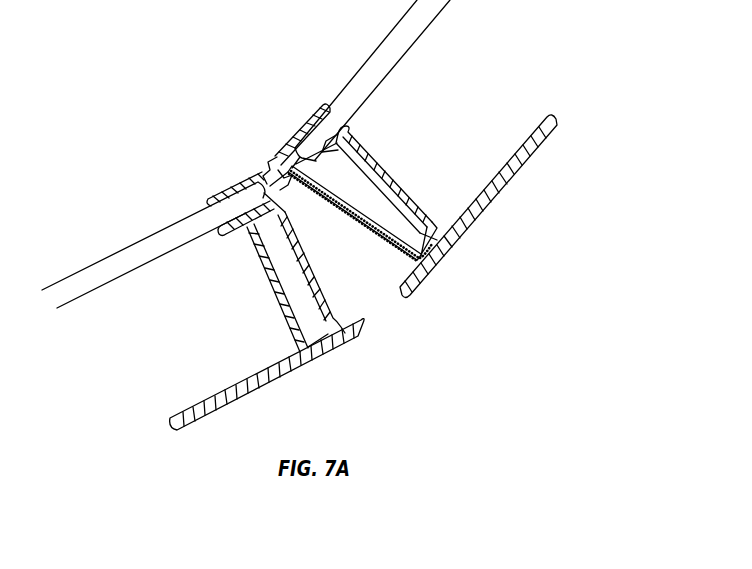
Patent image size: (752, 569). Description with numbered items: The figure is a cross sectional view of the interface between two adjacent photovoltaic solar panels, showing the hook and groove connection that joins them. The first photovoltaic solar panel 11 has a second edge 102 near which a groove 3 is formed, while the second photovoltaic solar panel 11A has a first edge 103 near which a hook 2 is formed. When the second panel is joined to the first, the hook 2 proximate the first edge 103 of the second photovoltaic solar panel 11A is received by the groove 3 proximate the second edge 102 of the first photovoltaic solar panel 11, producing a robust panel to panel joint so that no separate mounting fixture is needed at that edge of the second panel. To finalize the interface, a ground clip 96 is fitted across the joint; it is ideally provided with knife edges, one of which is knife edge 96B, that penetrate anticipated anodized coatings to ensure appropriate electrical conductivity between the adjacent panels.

The hook 2 is at (268, 170).
The groove 3 is at (287, 187).
The first photovoltaic solar panel 11 is at (165, 272).
The second photovoltaic solar panel 11A is at (408, 80).
The ground clip 96 is at (368, 226).
The knife edge 96B is at (433, 252).
The second edge 102 is at (310, 263).
The first edge 103 is at (362, 210).